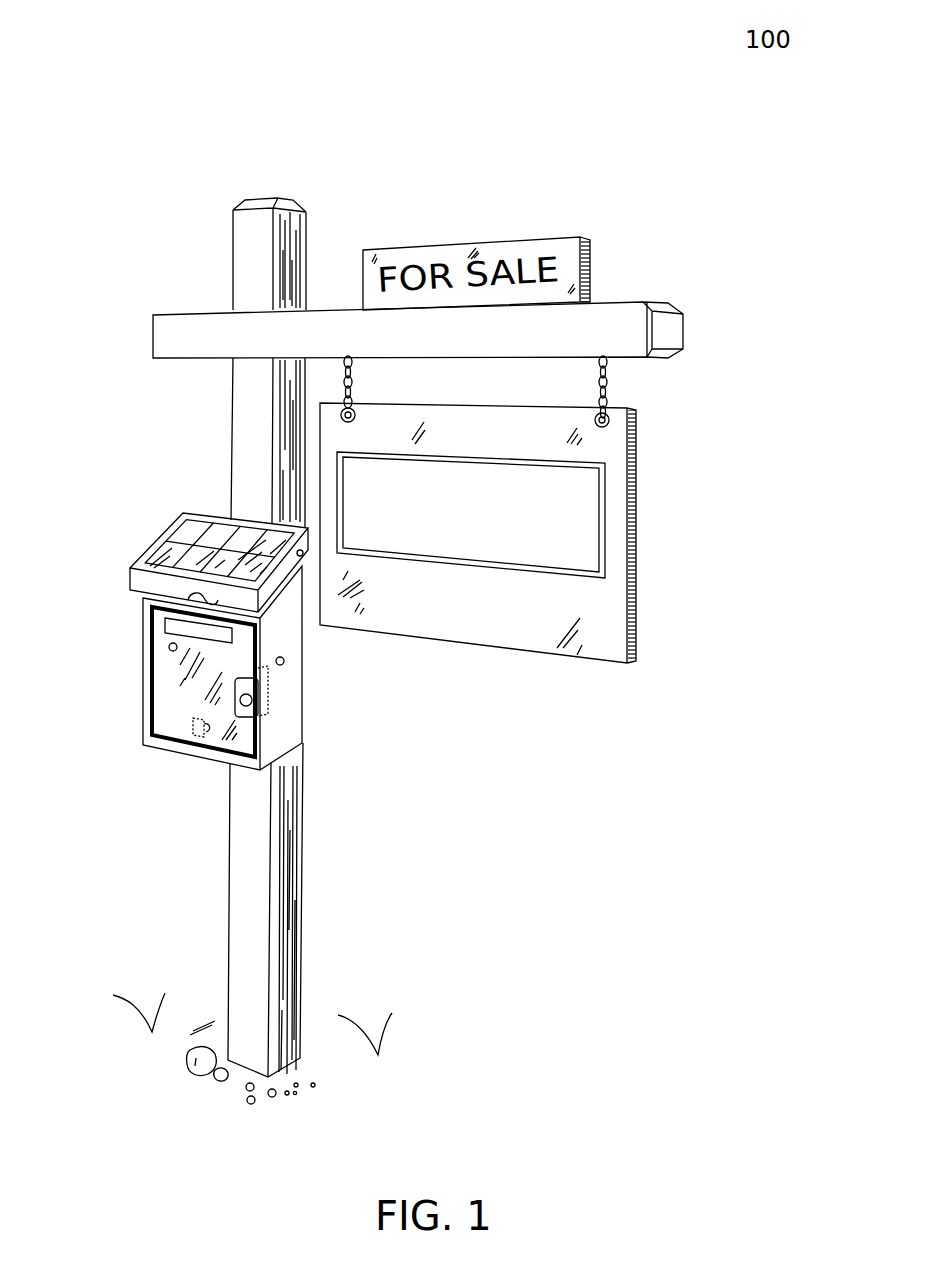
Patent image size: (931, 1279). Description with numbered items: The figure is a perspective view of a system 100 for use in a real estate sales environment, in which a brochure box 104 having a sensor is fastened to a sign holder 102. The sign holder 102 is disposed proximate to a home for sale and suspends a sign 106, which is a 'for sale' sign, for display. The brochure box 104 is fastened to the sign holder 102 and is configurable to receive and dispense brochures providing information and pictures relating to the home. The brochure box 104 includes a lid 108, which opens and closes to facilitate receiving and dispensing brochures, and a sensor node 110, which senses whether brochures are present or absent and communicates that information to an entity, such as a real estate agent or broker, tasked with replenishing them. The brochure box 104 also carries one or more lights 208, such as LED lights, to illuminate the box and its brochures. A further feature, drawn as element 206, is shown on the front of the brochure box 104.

The system 100 is at (252, 651).
The sign holder 102 is at (189, 314).
The brochure box 104 is at (288, 680).
The sign 106 is at (590, 665).
The lid 108 is at (205, 514).
The sensor node 110 is at (235, 700).
The latch 206 is at (197, 736).
The lights 208 is at (170, 648).